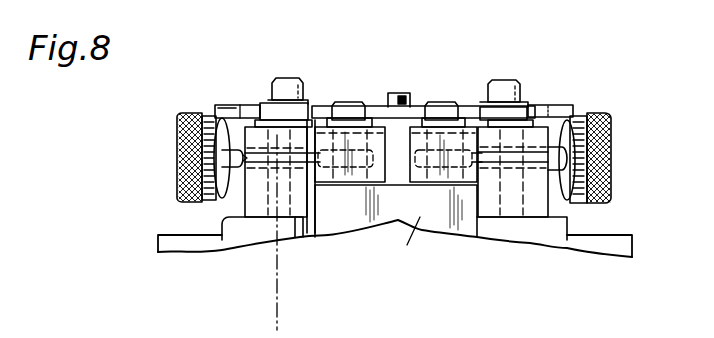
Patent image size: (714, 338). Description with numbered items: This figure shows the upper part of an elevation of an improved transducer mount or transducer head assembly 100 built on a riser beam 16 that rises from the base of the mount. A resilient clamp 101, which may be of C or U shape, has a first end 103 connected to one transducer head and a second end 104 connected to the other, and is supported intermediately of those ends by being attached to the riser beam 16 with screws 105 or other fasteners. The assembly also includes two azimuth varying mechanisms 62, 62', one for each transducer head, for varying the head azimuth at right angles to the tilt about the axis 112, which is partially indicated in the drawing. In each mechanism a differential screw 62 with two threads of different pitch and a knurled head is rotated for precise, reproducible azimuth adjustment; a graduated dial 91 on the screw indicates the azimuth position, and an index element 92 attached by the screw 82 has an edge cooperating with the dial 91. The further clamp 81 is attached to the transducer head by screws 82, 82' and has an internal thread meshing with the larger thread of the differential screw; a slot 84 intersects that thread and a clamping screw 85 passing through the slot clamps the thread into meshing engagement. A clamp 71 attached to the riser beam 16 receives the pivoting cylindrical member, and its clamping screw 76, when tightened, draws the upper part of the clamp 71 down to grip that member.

The riser beam 16 is at (406, 244).
The differential screw 62 is at (156, 157).
The azimuth varying mechanism 62' is at (605, 158).
The clamp 71 is at (345, 186).
The clamping screw 76 is at (345, 105).
The further clamp 81 is at (223, 215).
The screw 82 is at (291, 68).
The screw 82' is at (522, 146).
The slot 84 is at (223, 193).
The clamping screw 85 is at (270, 110).
The dial 91 is at (185, 120).
The index element 92 is at (222, 103).
The transducer head assembly 100 is at (156, 246).
The resilient clamp 101 is at (418, 102).
The end 103 is at (237, 103).
The end 104 is at (557, 102).
The screws 105 is at (393, 93).
The axis 112 is at (278, 302).